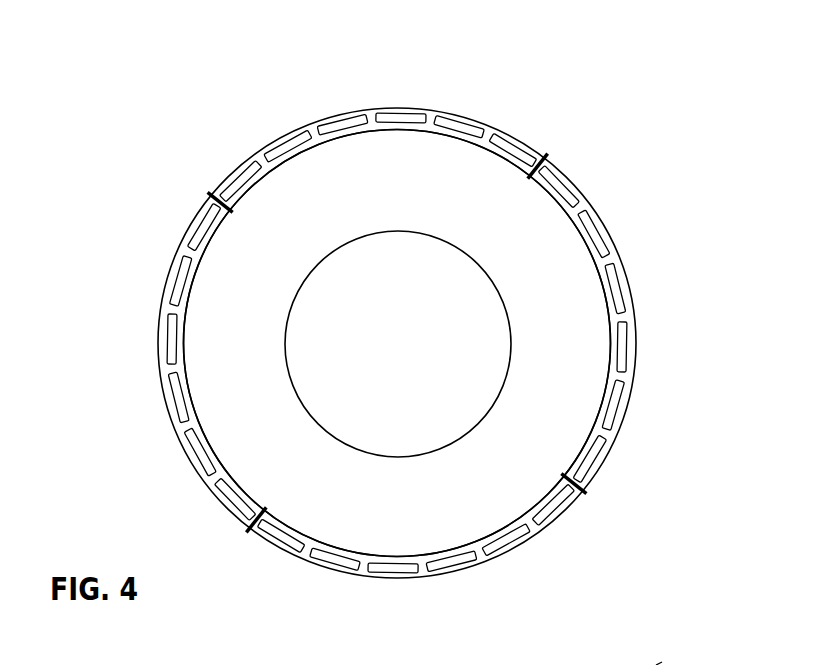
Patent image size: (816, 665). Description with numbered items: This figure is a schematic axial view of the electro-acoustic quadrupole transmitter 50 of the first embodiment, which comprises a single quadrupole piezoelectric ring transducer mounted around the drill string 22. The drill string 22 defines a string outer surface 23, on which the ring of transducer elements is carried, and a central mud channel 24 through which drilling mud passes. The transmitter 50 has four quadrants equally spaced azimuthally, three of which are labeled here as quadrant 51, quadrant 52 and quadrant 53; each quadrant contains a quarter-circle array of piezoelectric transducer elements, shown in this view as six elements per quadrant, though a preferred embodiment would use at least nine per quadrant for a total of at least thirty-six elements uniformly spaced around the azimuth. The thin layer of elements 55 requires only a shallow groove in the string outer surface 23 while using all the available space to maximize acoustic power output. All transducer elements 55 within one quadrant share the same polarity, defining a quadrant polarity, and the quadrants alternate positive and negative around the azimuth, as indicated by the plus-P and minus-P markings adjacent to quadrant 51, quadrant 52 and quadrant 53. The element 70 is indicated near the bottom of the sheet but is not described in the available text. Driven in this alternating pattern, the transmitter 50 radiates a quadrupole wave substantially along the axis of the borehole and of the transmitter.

The drill string 22 is at (297, 207).
The string outer surface 23 is at (216, 186).
The mud channel 24 is at (322, 355).
The electro-acoustic quadrupole transmitter 50 is at (543, 97).
The quadrant 51 is at (397, 67).
The quadrant 52 is at (682, 345).
The quadrant 53 is at (395, 612).
The electrodes 55 is at (338, 123).
The lead 70 is at (682, 651).